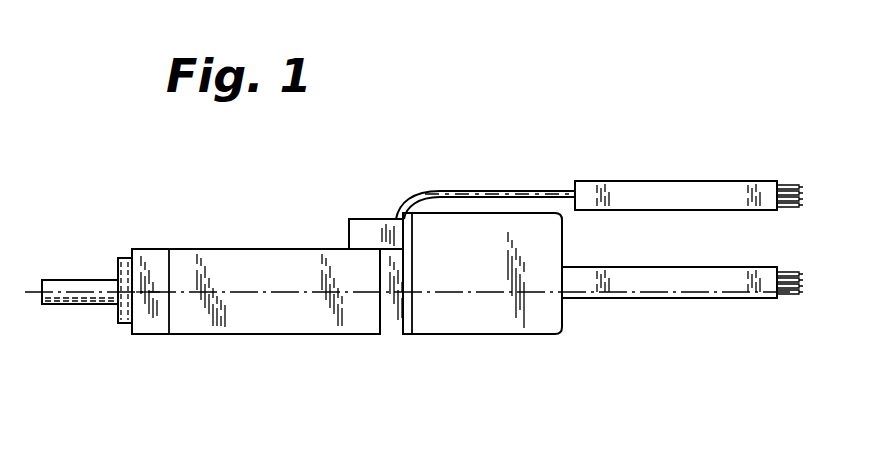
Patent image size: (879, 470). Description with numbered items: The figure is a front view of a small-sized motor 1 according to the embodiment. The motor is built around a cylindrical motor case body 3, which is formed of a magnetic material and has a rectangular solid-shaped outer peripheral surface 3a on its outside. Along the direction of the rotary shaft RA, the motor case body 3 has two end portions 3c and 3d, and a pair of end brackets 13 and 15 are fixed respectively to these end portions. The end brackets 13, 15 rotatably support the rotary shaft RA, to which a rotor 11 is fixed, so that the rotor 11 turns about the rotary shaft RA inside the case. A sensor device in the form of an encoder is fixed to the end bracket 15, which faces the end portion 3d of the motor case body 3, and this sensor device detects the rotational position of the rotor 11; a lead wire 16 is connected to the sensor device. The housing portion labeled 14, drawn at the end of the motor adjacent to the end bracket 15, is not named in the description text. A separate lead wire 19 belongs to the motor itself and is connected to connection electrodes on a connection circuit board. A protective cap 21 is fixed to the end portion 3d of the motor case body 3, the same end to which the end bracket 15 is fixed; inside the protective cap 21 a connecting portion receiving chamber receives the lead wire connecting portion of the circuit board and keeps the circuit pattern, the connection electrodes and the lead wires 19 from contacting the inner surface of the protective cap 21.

The small-sized motor 1 is at (164, 212).
The motor case body 3 is at (215, 249).
The outer peripheral surface 3a is at (245, 256).
The end portion 3c is at (170, 335).
The end portion 3d is at (380, 335).
The rotor 11 is at (88, 306).
The end bracket 13 is at (153, 312).
The motor housing 14 is at (455, 317).
The end bracket 15 is at (401, 330).
The lead wire 16 is at (637, 302).
The lead wire 19 is at (446, 189).
The protective cap 21 is at (371, 218).
The rotary shaft RA is at (34, 290).